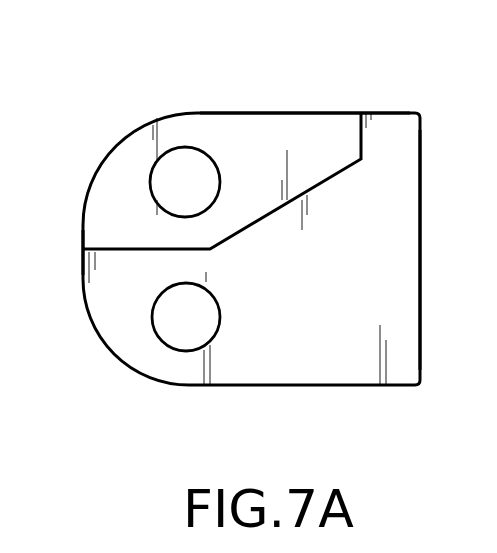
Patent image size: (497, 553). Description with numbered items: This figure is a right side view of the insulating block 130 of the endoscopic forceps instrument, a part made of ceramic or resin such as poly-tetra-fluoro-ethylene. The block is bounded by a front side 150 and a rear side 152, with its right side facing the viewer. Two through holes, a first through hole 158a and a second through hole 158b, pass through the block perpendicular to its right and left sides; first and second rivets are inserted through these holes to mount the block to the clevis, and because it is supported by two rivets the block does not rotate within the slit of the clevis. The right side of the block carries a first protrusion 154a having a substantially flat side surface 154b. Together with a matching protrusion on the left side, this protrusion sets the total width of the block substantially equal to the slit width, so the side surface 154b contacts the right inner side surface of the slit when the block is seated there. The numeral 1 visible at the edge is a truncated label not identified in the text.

The insulating block 130 is at (187, 78).
The front side 150 is at (83, 273).
The rear side 152 is at (420, 215).
The first protrusion 154a is at (271, 106).
The side surface 154b is at (338, 126).
The first through hole 158a is at (176, 351).
The second through hole 158b is at (157, 183).
The truncated numeral 1 is at (491, 297).